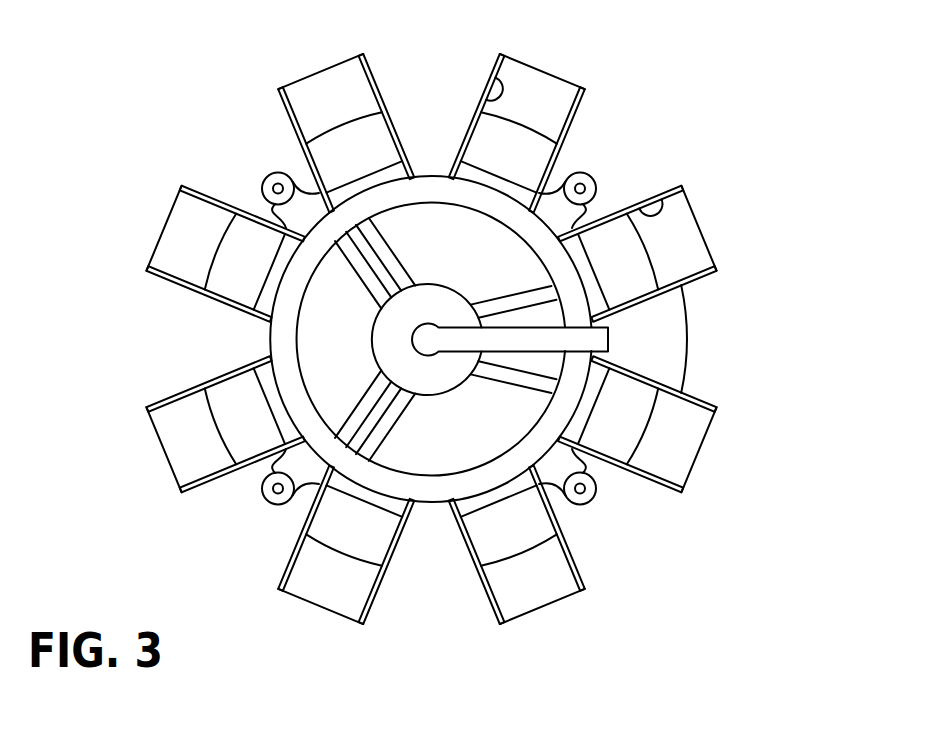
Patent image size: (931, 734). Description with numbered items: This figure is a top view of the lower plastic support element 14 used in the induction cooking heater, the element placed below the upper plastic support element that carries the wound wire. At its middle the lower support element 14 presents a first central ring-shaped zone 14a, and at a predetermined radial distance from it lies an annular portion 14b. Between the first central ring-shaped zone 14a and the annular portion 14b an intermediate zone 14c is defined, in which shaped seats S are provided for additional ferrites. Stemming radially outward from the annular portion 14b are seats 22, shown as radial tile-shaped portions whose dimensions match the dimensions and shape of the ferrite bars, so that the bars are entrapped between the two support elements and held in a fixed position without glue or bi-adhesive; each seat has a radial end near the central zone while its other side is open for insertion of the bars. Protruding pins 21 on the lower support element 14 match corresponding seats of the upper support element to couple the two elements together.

The lower plastic support element 14 is at (767, 187).
The first central ring-shaped zone 14a is at (448, 303).
The annular portion 14b is at (283, 338).
The intermediate zone 14c is at (328, 376).
The protruding pins 21 is at (588, 172).
The seats 22 is at (495, 86).
The shaped seats S is at (442, 443).